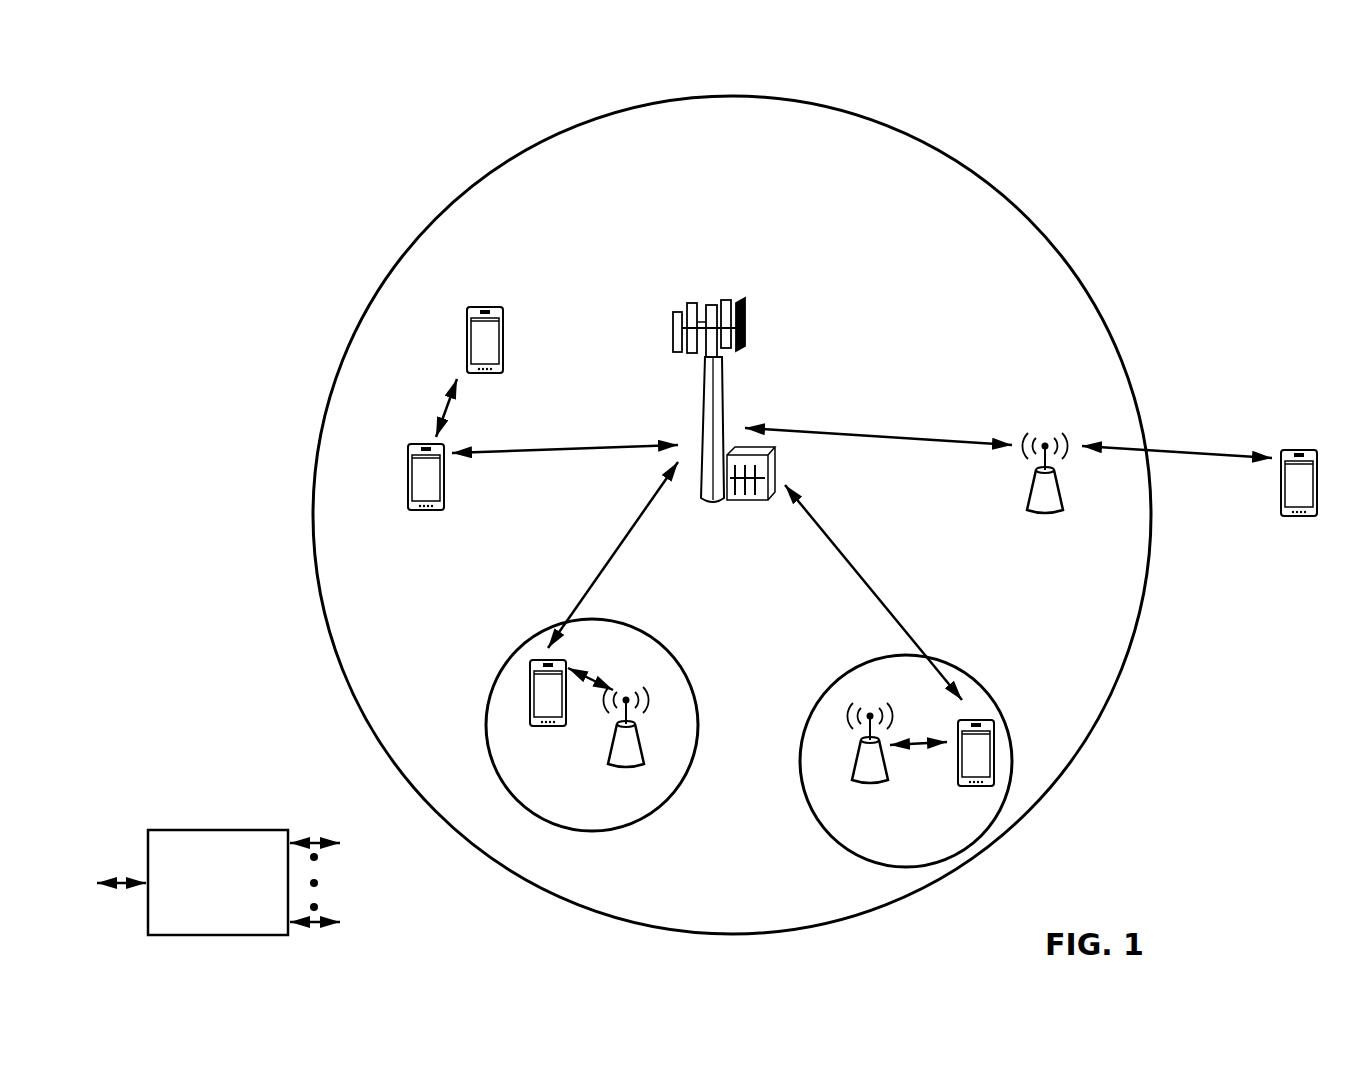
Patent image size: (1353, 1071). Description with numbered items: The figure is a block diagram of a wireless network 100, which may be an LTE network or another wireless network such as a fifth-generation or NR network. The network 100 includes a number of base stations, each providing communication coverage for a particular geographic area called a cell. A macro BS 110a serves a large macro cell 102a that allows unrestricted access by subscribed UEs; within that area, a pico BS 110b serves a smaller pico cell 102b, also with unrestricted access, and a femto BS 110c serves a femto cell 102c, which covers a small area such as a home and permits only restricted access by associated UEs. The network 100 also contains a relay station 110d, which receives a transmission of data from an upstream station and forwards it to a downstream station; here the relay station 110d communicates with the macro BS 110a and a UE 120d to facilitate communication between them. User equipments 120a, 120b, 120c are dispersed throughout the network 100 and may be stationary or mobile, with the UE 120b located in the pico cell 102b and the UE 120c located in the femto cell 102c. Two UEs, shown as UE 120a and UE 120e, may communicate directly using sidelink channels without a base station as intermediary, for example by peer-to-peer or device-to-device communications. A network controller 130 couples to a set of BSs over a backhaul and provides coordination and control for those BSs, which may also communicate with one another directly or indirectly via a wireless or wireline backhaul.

The wireless network 100 is at (200, 91).
The macro cell 102a is at (1010, 201).
The pico cell 102b is at (681, 665).
The femto cell 102c is at (845, 673).
The macro BS 110a is at (721, 296).
The pico BS 110b is at (647, 758).
The femto BS 110c is at (855, 768).
The relay station 110d is at (1046, 438).
The UE 120a is at (408, 473).
The UE 120b is at (537, 727).
The UE 120c is at (968, 789).
The UE 120d is at (1311, 449).
The UE 120e is at (467, 325).
The network controller 130 is at (218, 830).